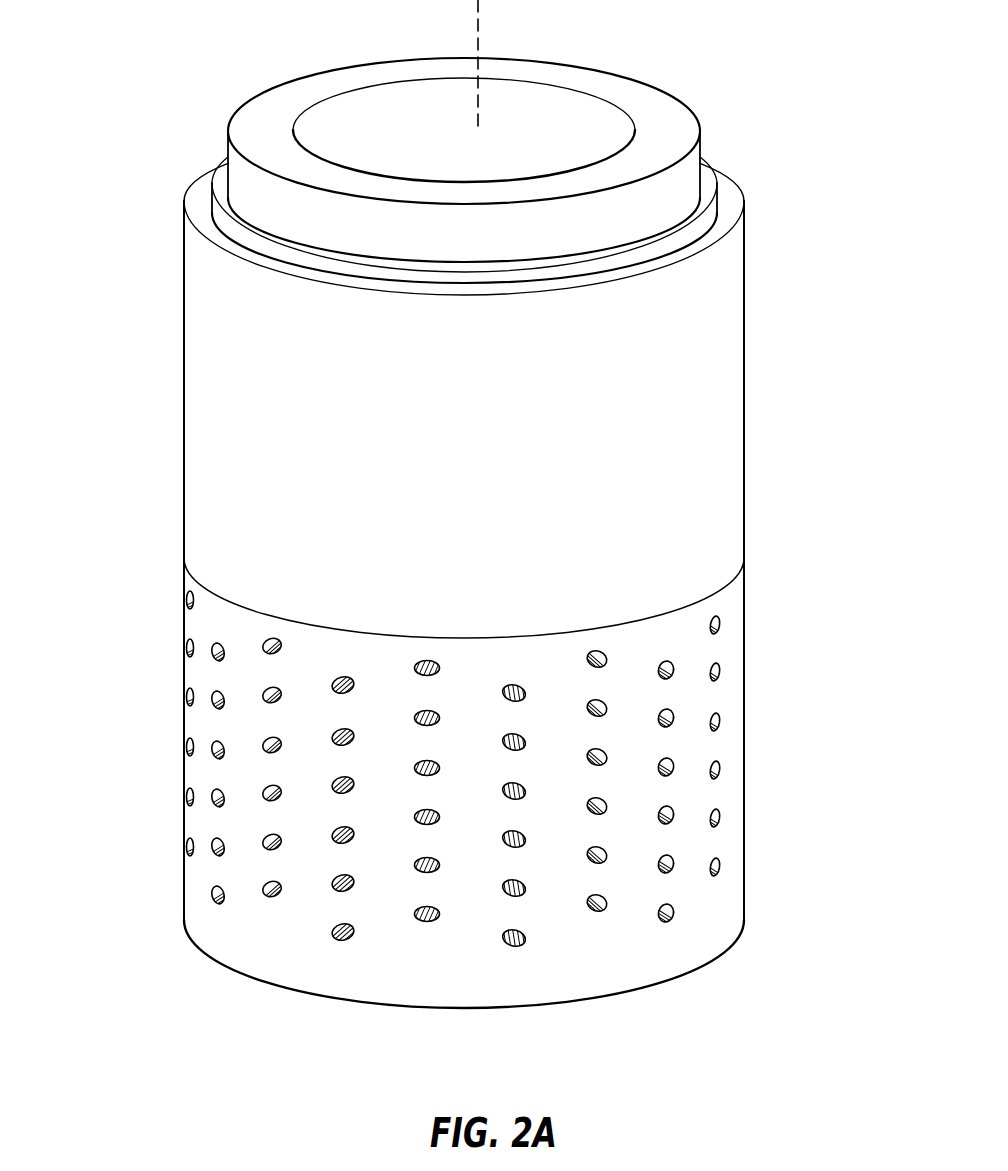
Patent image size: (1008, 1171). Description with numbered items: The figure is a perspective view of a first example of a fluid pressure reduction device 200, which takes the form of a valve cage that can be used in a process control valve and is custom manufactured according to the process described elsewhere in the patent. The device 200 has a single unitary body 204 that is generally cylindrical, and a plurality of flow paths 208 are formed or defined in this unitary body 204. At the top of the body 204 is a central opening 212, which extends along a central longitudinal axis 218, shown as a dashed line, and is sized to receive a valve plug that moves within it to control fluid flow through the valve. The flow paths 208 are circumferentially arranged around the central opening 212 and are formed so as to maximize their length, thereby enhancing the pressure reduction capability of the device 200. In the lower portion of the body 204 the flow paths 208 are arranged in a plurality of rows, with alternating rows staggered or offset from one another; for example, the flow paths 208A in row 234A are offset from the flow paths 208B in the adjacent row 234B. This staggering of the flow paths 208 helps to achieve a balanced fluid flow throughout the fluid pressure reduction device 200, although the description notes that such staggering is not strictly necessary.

The fluid pressure reduction device 200 is at (768, 183).
The unitary body 204 is at (723, 437).
The flow paths 208 is at (560, 935).
The flow paths in first row 208A is at (452, 626).
The flow paths in second row 208B is at (453, 687).
The central opening 212 is at (617, 108).
The central longitudinal axis 218 is at (479, 29).
The first row 234A is at (263, 645).
The second row 234B is at (212, 650).